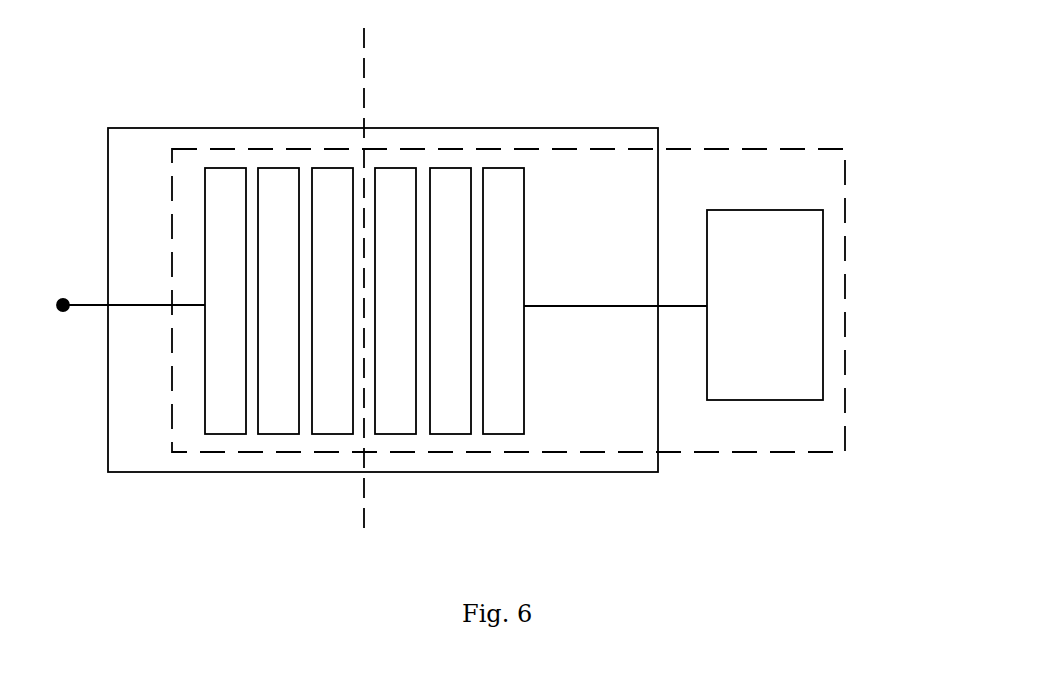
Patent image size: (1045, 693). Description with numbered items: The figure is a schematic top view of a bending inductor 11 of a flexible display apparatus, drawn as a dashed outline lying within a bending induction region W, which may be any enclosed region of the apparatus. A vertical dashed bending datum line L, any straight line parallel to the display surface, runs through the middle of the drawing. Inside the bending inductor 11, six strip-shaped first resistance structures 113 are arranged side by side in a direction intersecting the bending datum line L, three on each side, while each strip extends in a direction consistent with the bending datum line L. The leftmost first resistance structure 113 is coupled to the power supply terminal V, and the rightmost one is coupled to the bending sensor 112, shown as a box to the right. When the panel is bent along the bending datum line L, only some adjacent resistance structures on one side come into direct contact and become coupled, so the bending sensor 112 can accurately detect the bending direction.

The bending inductor 11 is at (845, 412).
The bending sensor 112 is at (823, 247).
The first resistance structures 113 is at (518, 194).
The bending induction region W is at (137, 174).
The power supply terminal V is at (119, 305).
The bending datum line L is at (364, 72).